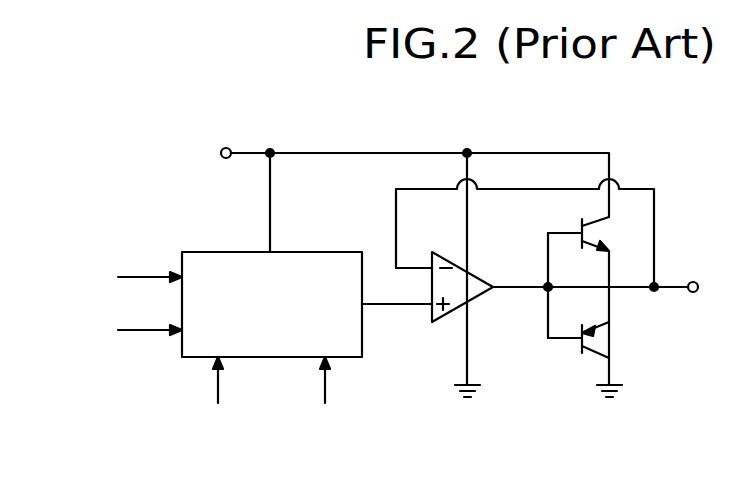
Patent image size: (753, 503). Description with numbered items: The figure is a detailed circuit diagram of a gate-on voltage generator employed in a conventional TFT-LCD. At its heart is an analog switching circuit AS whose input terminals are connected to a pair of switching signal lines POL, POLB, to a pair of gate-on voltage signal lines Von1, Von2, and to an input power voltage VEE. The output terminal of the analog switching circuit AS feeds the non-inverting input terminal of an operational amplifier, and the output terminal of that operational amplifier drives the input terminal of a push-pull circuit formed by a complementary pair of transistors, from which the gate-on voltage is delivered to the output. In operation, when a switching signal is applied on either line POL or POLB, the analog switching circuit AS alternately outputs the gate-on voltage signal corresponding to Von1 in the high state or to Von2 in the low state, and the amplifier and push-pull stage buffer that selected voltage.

The input power voltage VEE is at (385, 196).
The analog switching circuit AS is at (272, 304).
The switching signal line POL is at (120, 279).
The switching signal line POLB is at (113, 331).
The gate-on voltage signal line Von1 is at (215, 396).
The gate-on voltage signal line Von2 is at (324, 396).